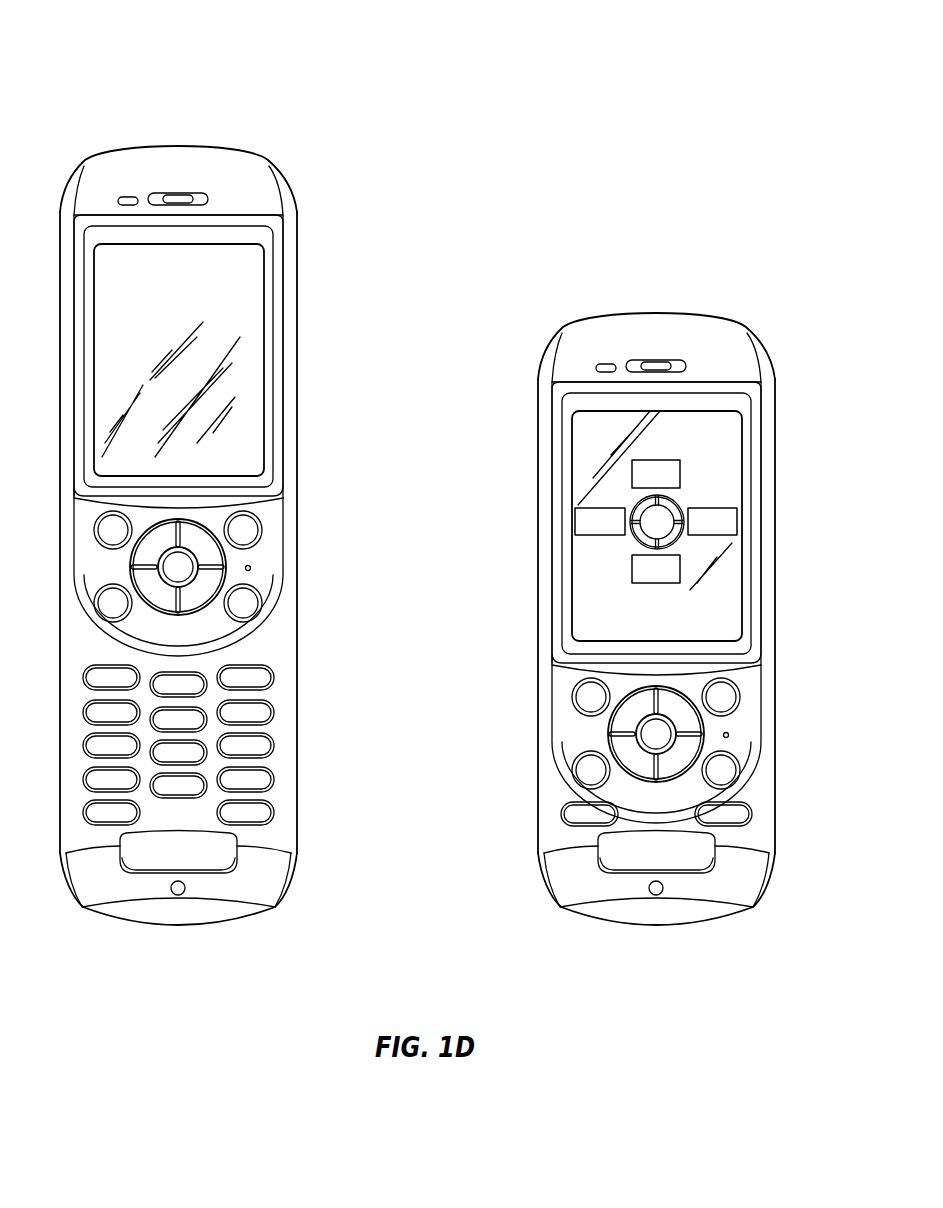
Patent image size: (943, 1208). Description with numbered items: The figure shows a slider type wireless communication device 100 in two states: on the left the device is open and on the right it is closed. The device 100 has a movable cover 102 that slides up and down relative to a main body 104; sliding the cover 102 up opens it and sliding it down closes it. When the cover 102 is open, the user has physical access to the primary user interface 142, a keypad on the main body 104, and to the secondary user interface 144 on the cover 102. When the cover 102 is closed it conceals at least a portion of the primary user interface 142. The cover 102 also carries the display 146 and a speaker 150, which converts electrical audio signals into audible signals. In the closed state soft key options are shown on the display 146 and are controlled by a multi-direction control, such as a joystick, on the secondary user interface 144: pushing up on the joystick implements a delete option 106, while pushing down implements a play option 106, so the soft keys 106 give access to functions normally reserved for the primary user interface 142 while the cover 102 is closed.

The wireless communication device 100 is at (219, 71).
The movable cover 102 is at (287, 182).
The main body 104 is at (207, 925).
The soft key 106 is at (653, 460).
The primary user interface 142 is at (300, 735).
The secondary user interface 144 is at (298, 560).
The display 146 is at (237, 297).
The speaker 150 is at (178, 199).